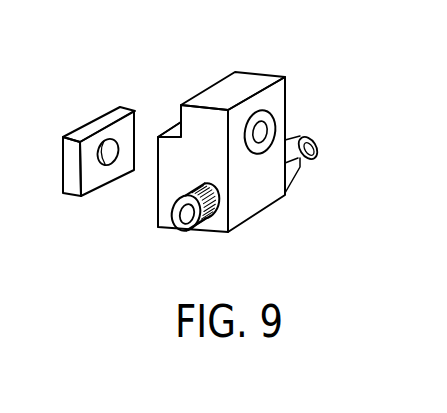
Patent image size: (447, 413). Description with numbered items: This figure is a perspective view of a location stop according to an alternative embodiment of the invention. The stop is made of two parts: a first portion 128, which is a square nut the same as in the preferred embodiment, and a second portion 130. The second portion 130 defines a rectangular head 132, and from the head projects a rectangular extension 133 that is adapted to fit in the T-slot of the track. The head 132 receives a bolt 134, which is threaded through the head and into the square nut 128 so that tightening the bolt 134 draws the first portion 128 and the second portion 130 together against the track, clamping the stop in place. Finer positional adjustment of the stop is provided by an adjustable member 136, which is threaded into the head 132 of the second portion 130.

The first portion 128 is at (93, 110).
The second portion 130 is at (260, 197).
The rectangular head 132 is at (233, 83).
The rectangular extension 133 is at (171, 158).
The bolt 134 is at (263, 132).
The adjustable member 136 is at (186, 222).